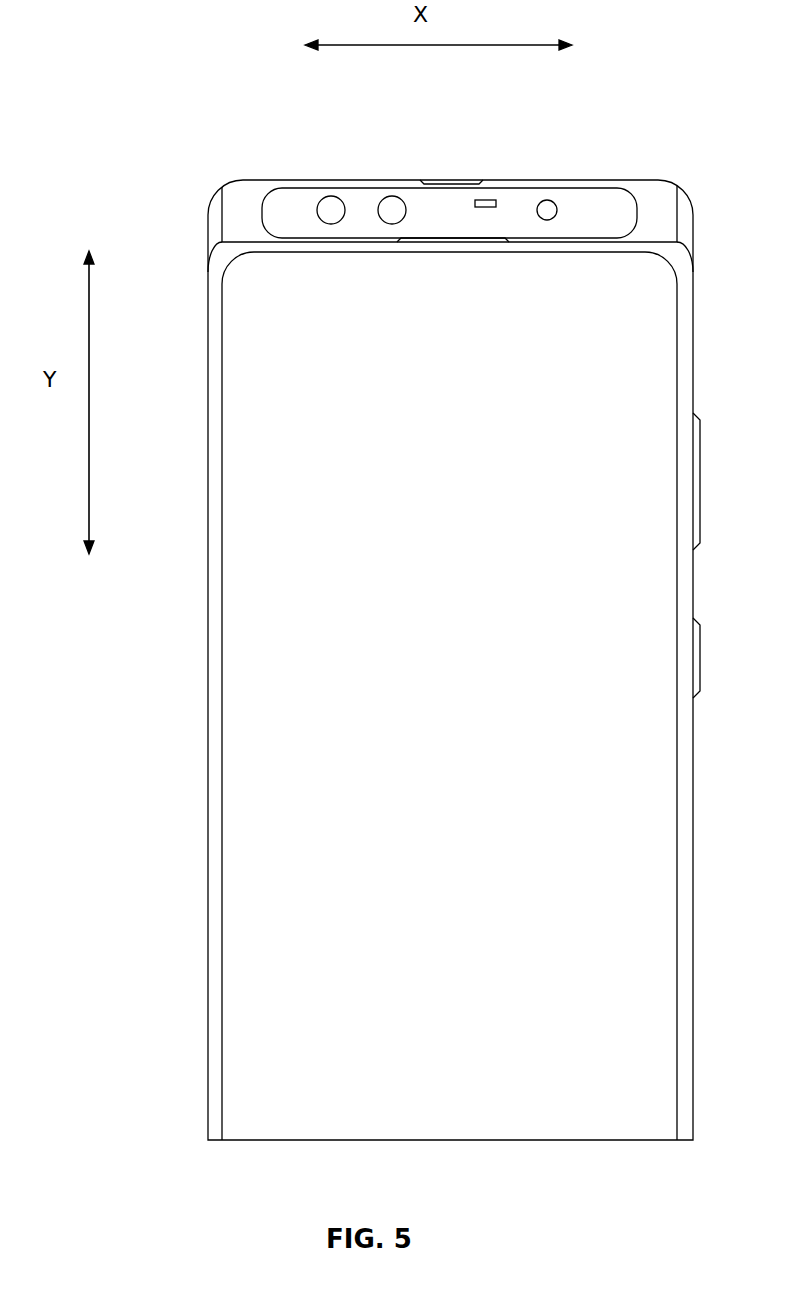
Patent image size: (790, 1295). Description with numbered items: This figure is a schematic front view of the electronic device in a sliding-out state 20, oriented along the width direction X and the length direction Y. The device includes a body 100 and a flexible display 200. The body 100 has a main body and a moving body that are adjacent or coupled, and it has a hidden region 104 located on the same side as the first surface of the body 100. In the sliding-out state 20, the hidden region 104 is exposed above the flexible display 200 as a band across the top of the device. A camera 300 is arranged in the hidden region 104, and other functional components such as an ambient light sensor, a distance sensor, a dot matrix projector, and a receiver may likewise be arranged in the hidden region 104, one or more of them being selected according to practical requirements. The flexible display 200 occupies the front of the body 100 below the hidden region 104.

The sliding-out state 20 is at (172, 52).
The body 100 is at (233, 198).
The hidden region 104 is at (508, 198).
The flexible display 200 is at (233, 800).
The camera 300 is at (333, 208).